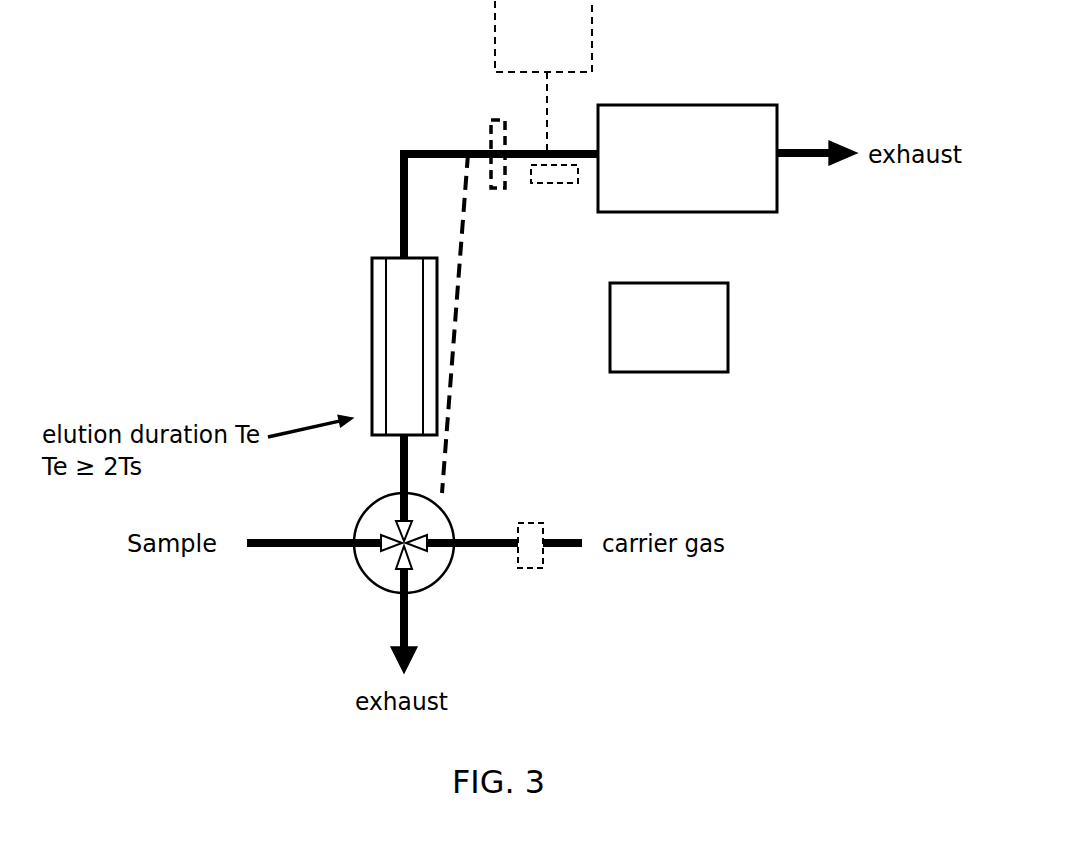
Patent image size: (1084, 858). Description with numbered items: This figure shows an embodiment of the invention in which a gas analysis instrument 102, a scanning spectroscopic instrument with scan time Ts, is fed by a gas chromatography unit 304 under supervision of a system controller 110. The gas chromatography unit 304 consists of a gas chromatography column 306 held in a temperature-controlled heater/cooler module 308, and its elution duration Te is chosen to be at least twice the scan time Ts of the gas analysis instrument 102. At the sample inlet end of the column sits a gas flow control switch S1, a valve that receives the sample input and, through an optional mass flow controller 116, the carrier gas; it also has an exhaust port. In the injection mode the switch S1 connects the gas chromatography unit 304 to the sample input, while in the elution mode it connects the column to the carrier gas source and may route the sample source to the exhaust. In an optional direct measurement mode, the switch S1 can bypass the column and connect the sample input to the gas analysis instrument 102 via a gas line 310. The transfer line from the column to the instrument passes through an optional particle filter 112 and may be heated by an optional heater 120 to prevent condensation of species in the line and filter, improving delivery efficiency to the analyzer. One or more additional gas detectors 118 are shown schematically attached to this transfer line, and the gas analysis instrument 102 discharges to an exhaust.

The gas analysis instrument 102 is at (707, 144).
The system controller 110 is at (690, 340).
The additional gas detectors 118 is at (560, 51).
The particle filter 112 is at (497, 190).
The heater 120 is at (553, 180).
The mass flow controller 116 is at (532, 568).
The gas chromatography unit 304 is at (293, 346).
The gas chromatography column 306 is at (403, 386).
The heater/cooler 308 is at (376, 290).
The gas line 310 is at (447, 398).
The gas flow control switch S1 is at (383, 573).